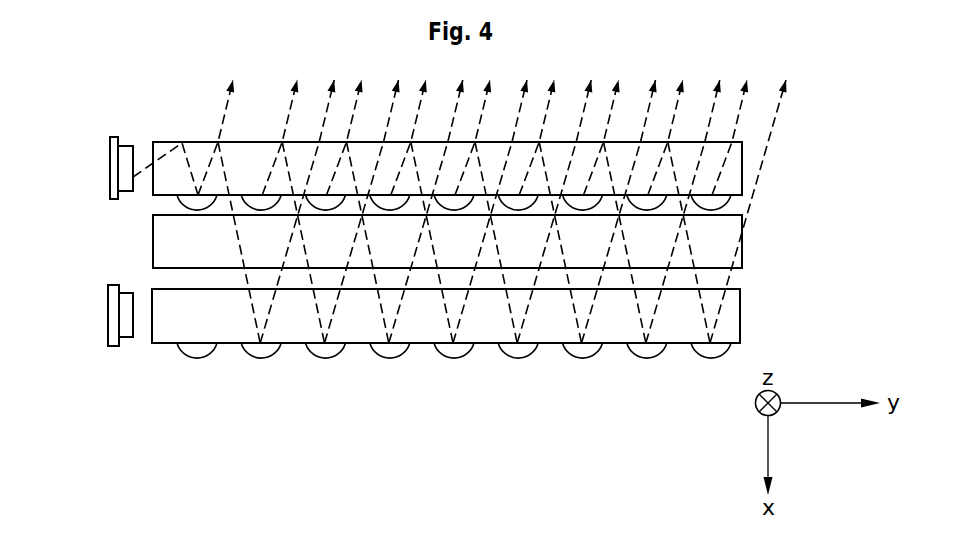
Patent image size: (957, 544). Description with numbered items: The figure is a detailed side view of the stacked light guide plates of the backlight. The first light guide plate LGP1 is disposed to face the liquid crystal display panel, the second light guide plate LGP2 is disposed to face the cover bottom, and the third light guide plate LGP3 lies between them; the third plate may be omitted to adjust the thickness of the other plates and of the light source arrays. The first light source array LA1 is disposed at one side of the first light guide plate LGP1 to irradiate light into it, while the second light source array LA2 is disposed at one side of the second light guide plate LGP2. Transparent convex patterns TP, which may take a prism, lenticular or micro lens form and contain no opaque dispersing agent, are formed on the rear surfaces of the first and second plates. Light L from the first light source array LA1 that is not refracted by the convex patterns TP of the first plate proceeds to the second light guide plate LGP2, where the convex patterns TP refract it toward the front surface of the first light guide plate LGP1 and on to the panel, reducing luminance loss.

The first light guide plate LGP1 is at (738, 176).
The second light guide plate LGP2 is at (723, 243).
The third light guide plate LGP3 is at (732, 312).
The convex patterns TP is at (718, 203).
The first light source array LA1 is at (113, 168).
The second light source array LA2 is at (113, 314).
The light L is at (163, 152).